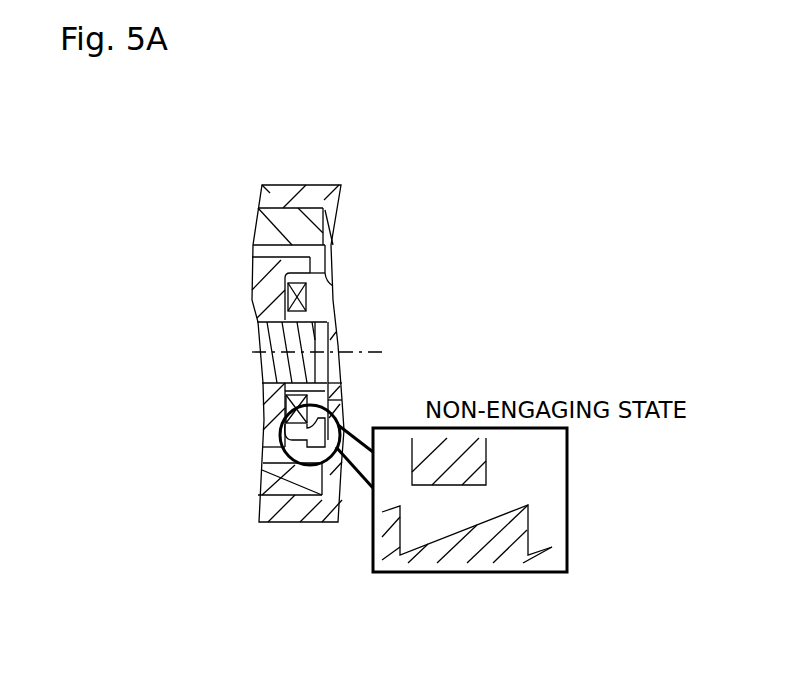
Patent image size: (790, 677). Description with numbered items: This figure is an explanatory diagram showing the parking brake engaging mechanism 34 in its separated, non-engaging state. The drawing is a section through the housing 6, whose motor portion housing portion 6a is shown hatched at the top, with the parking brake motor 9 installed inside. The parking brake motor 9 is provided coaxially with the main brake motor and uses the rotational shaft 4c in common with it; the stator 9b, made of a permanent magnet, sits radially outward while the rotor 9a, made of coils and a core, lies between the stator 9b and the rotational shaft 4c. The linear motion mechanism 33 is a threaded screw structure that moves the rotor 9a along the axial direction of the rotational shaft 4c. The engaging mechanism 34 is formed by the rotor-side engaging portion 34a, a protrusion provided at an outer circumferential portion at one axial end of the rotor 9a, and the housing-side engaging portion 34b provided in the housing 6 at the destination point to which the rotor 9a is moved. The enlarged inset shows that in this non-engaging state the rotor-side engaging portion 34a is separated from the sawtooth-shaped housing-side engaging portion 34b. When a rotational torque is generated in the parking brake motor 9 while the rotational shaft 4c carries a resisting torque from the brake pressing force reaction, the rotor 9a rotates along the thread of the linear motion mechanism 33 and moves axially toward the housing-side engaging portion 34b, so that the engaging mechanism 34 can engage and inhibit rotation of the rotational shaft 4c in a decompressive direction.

The housing 6 is at (299, 185).
The motor portion housing portion 6a is at (325, 193).
The parking brake motor 9 is at (250, 298).
The rotor 9a is at (263, 313).
The stator 9b is at (263, 232).
The linear motion mechanism 33 is at (308, 342).
The rotational shaft 4c is at (268, 378).
The engaging mechanism 34 is at (325, 252).
The rotor-side engaging portion 34a is at (417, 452).
The housing-side engaging portion 34b is at (308, 458).